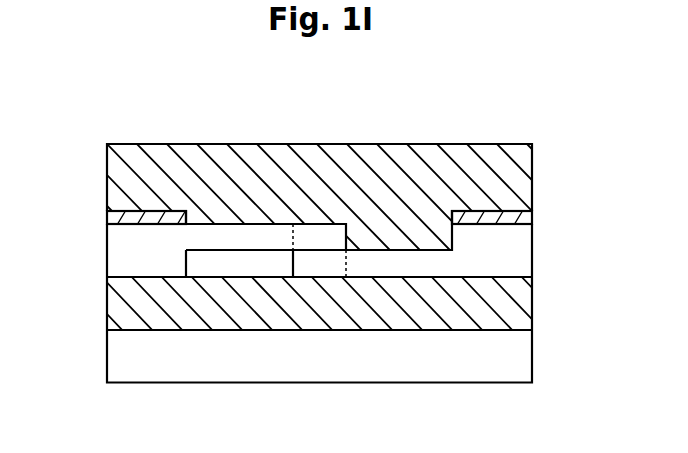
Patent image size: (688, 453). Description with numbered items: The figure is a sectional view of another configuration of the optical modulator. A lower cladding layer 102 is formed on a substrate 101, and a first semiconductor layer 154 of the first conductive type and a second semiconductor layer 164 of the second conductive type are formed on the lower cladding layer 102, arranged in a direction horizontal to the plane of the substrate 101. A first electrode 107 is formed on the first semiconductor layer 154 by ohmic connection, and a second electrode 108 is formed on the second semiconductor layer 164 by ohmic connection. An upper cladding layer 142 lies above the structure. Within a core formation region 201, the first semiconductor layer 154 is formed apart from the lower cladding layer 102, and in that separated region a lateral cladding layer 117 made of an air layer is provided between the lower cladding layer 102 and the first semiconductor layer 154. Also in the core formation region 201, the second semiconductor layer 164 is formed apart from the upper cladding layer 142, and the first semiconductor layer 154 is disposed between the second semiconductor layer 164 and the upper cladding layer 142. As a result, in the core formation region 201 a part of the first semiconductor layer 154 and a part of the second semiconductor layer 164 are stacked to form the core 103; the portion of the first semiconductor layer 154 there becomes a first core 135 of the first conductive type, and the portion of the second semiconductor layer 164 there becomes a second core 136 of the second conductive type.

The substrate 101 is at (533, 357).
The lower cladding layer 102 is at (533, 305).
The core 103 is at (377, 113).
The first electrode 107 is at (107, 217).
The second electrode 108 is at (533, 218).
The lateral cladding layer 117 is at (225, 263).
The first core 135 is at (310, 242).
The second core 136 is at (330, 257).
The upper cladding layer 142 is at (533, 178).
The first semiconductor layer 154 is at (107, 250).
The second semiconductor layer 164 is at (533, 250).
The core formation region 201 is at (353, 387).